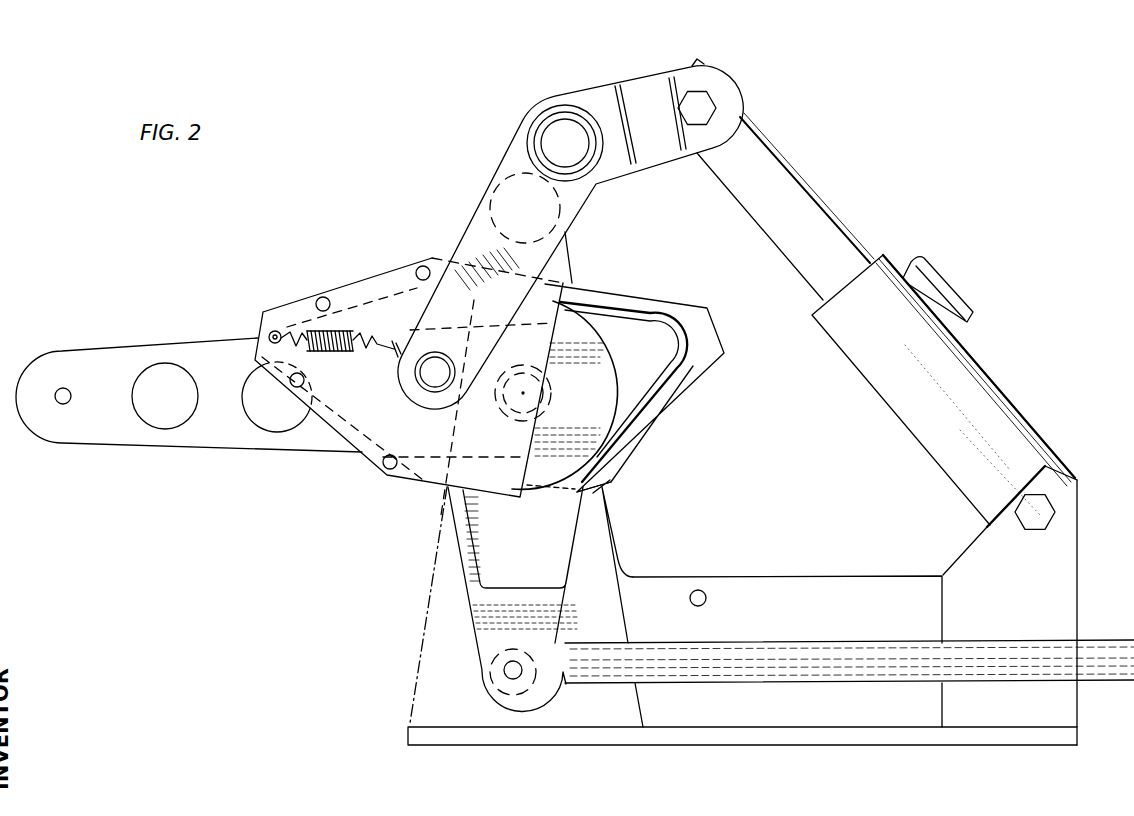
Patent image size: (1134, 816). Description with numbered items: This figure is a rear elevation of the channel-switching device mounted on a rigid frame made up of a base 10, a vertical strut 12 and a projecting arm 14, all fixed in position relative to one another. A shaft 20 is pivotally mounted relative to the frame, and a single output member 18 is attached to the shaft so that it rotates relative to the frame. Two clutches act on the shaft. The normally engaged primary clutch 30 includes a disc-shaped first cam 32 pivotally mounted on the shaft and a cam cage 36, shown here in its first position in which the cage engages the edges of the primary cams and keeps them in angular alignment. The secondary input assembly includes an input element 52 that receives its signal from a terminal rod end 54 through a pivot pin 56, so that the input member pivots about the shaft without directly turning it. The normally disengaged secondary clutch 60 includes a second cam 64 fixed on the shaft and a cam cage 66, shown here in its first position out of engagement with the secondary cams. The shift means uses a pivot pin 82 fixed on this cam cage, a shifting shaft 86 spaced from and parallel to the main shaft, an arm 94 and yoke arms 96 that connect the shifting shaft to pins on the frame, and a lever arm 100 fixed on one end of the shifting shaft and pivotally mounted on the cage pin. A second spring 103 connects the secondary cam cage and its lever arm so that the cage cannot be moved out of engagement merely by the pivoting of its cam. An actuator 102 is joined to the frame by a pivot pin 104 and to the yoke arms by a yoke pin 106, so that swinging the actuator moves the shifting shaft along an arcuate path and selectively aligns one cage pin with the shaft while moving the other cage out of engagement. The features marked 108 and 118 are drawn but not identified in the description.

The base 10 is at (720, 735).
The vertical strut 12 is at (752, 577).
The projecting arm 14 is at (613, 547).
The output member 18 is at (184, 450).
The shaft 20 is at (548, 393).
The primary clutch 30 is at (726, 410).
The first cam 32 is at (671, 352).
The cam cage 36 is at (690, 292).
The input element 52 is at (487, 617).
The terminal rod end 54 is at (770, 665).
The pivot pin 56 is at (512, 670).
The secondary clutch 60 is at (355, 262).
The second cam 64 is at (608, 458).
The cam cage 66 is at (376, 489).
The pivot pin 82 is at (443, 355).
The shifting shaft 86 is at (562, 112).
The arm 94 is at (568, 256).
The yoke arms 96 is at (635, 92).
The lever arm 100 is at (484, 176).
The actuator 102 is at (873, 236).
The second spring 103 is at (343, 333).
The pivot pin 104 is at (1055, 512).
The yoke pin 106 is at (703, 109).
The strut 108 is at (775, 176).
The stop tab 118 is at (957, 290).